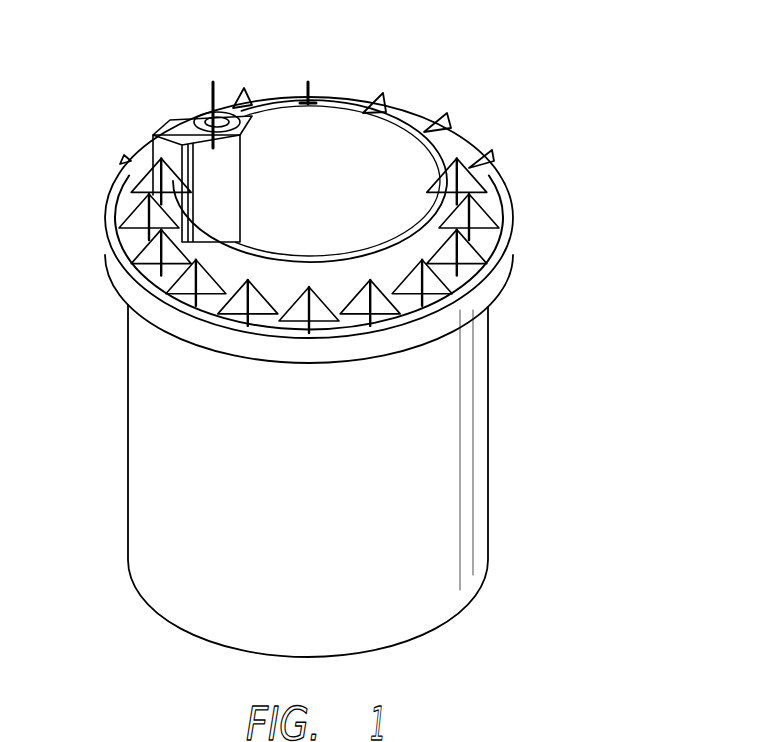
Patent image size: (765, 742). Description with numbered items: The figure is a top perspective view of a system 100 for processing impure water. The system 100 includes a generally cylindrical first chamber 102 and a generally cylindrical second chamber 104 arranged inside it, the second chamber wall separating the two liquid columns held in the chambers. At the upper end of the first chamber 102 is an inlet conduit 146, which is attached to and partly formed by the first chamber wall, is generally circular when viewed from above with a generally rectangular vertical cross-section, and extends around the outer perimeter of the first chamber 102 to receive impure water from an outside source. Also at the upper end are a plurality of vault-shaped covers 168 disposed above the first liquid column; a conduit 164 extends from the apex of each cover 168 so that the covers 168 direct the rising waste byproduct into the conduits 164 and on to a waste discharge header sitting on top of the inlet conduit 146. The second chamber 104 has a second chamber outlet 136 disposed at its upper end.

The system 100 is at (572, 92).
The first chamber 102 is at (467, 482).
The second chamber 104 is at (332, 120).
The second chamber outlet 136 is at (207, 146).
The inlet conduit 146 is at (122, 288).
The conduits 164 is at (447, 120).
The covers 168 is at (245, 315).